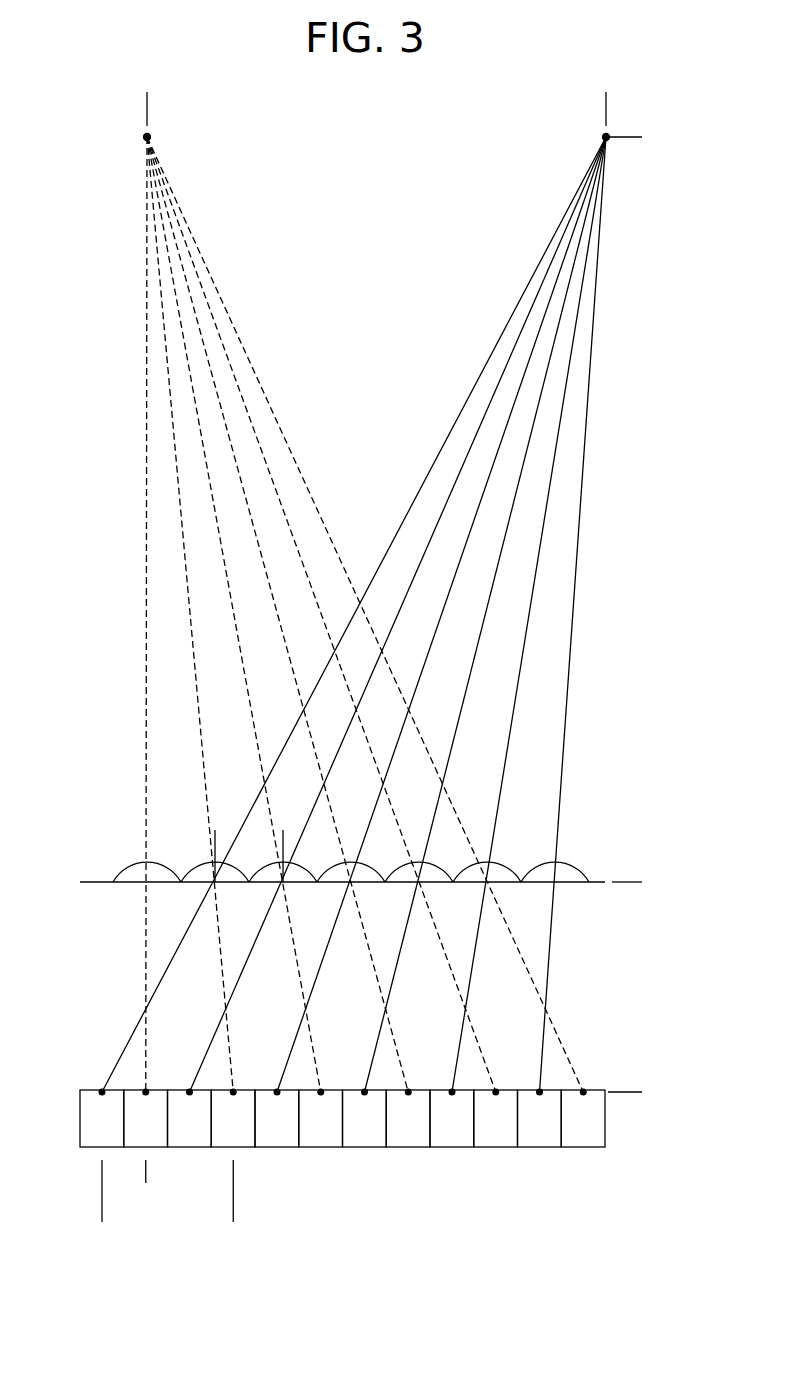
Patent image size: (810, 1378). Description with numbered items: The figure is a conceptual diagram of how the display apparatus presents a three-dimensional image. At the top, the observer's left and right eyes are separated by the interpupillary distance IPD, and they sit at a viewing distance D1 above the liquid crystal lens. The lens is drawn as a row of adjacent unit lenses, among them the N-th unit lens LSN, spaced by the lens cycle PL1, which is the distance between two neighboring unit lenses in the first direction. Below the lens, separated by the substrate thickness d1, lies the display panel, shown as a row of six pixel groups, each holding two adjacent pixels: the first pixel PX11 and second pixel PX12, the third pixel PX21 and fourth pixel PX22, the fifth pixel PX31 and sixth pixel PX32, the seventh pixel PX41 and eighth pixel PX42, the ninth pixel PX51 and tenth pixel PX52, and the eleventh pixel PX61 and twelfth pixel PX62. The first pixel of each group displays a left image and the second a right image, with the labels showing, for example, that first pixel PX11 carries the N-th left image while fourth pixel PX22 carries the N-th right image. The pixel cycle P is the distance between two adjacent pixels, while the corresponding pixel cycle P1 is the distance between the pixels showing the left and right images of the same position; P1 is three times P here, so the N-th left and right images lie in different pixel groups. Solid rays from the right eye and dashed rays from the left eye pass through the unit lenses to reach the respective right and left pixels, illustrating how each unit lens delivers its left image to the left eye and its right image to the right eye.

The interpupillary distance IPD is at (147, 96).
The viewing distance D1 is at (635, 137).
The substrate thickness d1 is at (635, 884).
The N-th unit lens LSN is at (185, 865).
The lens cycle PL1 is at (215, 836).
The first pixel PX11 is at (97, 1088).
The second pixel PX12 is at (153, 1088).
The third pixel PX21 is at (203, 1088).
The fourth pixel PX22 is at (241, 1088).
The fifth pixel PX31 is at (289, 1088).
The sixth pixel PX32 is at (329, 1088).
The seventh pixel PX41 is at (377, 1088).
The eighth pixel PX42 is at (417, 1088).
The ninth pixel PX51 is at (463, 1088).
The tenth pixel PX52 is at (504, 1088).
The eleventh pixel PX61 is at (550, 1088).
The twelfth pixel PX62 is at (592, 1088).
The pixel cycle P is at (102, 1178).
The corresponding pixel cycle P1 is at (233, 1212).